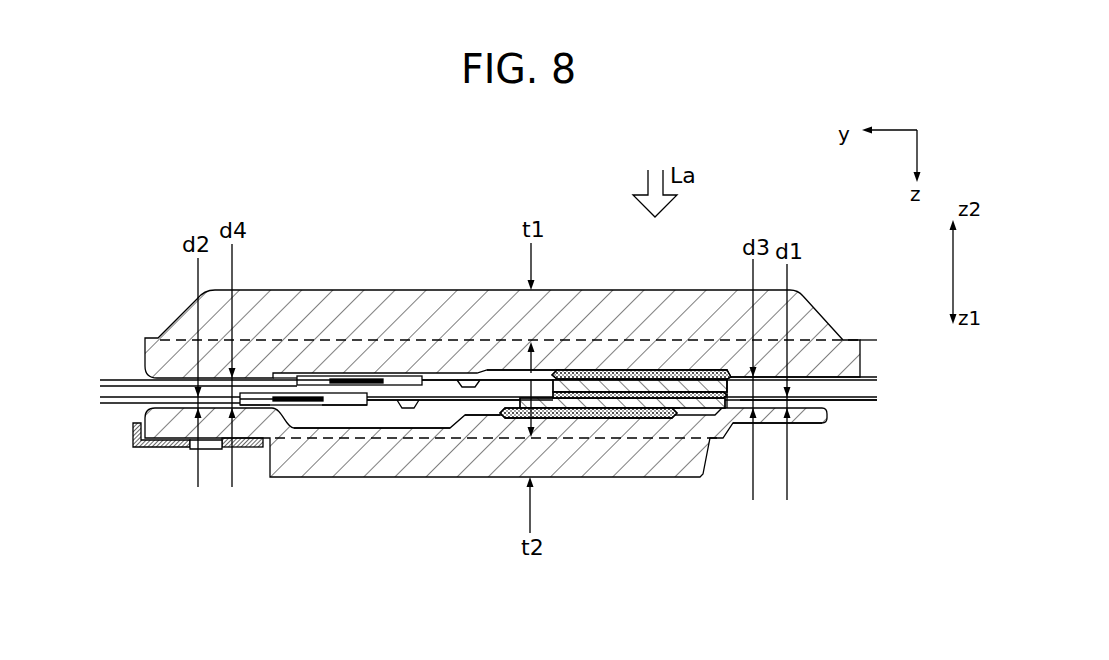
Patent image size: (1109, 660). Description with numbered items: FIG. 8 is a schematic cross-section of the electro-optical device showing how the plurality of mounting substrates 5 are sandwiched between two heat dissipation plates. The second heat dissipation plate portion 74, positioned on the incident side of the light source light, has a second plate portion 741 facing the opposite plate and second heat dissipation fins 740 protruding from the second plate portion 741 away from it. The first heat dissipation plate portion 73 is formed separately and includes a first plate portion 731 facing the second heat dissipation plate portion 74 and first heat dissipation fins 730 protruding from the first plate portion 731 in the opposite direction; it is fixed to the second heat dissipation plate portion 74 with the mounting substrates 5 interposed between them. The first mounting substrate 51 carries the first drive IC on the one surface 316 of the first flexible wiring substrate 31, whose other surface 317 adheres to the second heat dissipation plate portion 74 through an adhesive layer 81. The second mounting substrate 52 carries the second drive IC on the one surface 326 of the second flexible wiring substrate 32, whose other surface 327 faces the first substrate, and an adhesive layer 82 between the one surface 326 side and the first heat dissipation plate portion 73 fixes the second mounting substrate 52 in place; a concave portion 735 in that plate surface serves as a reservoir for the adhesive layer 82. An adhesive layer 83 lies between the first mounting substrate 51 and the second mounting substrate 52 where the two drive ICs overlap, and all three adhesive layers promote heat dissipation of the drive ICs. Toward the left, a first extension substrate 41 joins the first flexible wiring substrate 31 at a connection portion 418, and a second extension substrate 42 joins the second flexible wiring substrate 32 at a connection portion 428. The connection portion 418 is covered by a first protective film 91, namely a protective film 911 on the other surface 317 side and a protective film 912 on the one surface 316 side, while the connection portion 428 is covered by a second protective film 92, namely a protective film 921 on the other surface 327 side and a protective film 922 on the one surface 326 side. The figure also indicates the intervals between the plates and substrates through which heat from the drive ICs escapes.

The first extension substrate 41 is at (117, 380).
The second extension substrate 42 is at (115, 402).
The connection portion 418 is at (337, 366).
The connection portion 428 is at (303, 420).
The first protective film 91 is at (333, 304).
The protective film 911 is at (395, 377).
The protective film 912 is at (313, 391).
The second protective film 92 is at (291, 489).
The protective film 921 is at (240, 406).
The protective film 922 is at (322, 406).
The second heat dissipation plate portion 74 is at (819, 302).
The second heat dissipation fins 740 is at (443, 310).
The second plate portion 741 is at (473, 352).
The first heat dissipation plate portion 73 is at (705, 478).
The first heat dissipation fins 730 is at (396, 478).
The first plate portion 731 is at (490, 430).
The concave portion 735 is at (583, 416).
The first flexible wiring substrate 31 is at (576, 390).
The other surface 317 is at (684, 388).
The second flexible wiring substrate 32 is at (453, 404).
The one surface 316 is at (733, 424).
The one surface 326 is at (642, 409).
The other surface 327 is at (591, 396).
The adhesive layer 81 is at (613, 375).
The adhesive layer 82 is at (622, 419).
The adhesive layer 83 is at (672, 419).
The mounting substrate 5 is at (817, 449).
The first mounting substrate 51 is at (823, 381).
The second mounting substrate 52 is at (803, 398).